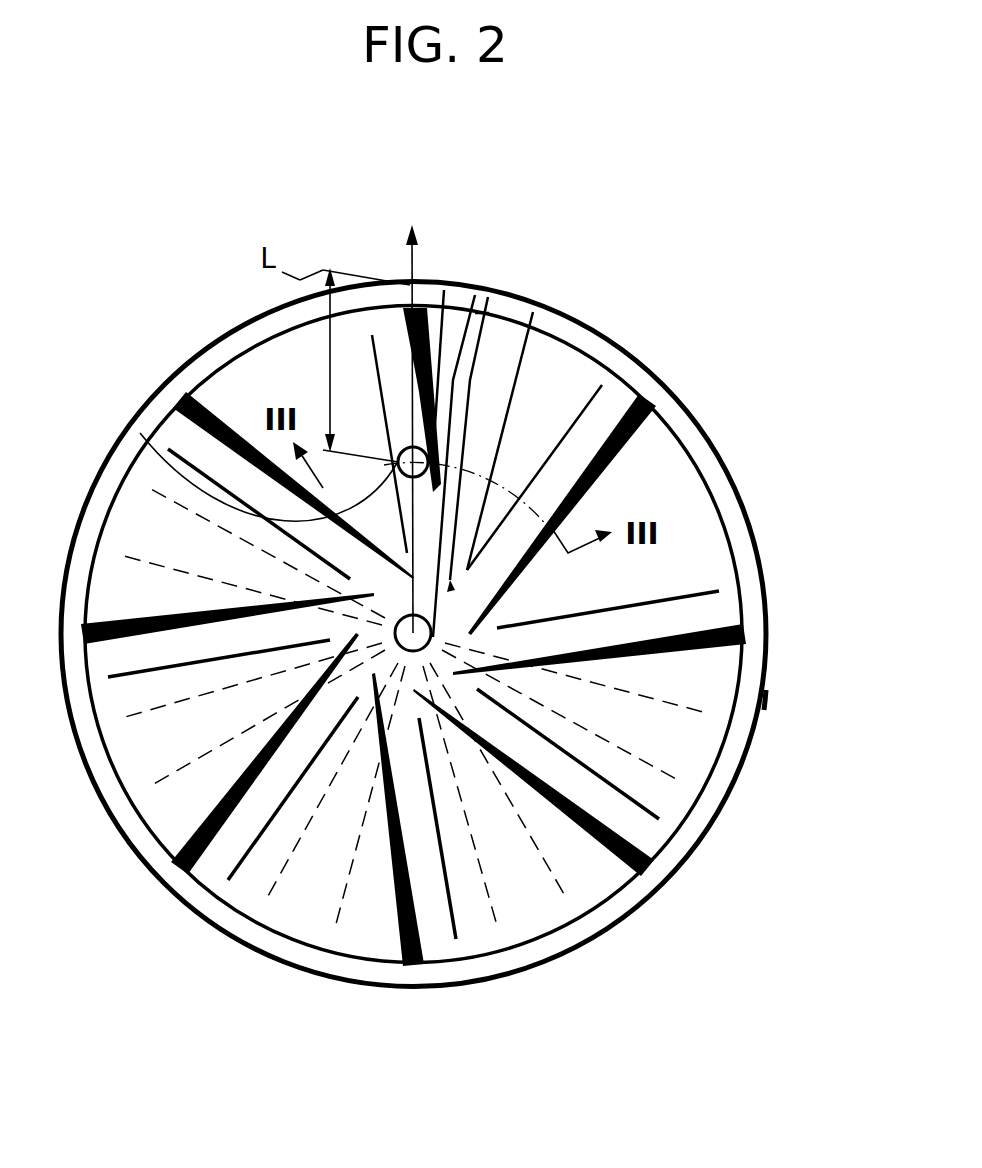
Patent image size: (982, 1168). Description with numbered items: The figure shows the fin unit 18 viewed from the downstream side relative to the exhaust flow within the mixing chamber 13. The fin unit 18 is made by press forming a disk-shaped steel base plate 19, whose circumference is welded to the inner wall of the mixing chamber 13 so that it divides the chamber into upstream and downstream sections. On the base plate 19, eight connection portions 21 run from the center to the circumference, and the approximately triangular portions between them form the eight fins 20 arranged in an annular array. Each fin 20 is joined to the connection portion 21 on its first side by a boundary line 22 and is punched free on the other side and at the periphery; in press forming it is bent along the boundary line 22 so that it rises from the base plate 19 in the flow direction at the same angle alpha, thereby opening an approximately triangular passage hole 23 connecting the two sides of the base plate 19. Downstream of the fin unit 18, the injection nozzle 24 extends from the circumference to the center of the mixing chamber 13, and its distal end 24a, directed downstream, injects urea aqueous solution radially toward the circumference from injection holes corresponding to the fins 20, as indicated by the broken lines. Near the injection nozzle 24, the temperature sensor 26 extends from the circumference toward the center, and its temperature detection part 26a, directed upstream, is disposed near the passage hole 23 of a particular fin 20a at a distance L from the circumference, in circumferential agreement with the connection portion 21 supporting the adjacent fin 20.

The mixing chamber 13 is at (634, 910).
The fin unit 18 is at (768, 697).
The base plate 19 is at (714, 790).
The fin 20 is at (277, 358).
The particular fin 20a is at (540, 368).
The connection portion 21 is at (385, 303).
The boundary line 22 is at (372, 360).
The passage hole 23 is at (430, 312).
The injection nozzle 24 is at (508, 317).
The distal end 24a is at (437, 620).
The temperature sensor 26 is at (463, 297).
The temperature detection part 26a is at (140, 433).